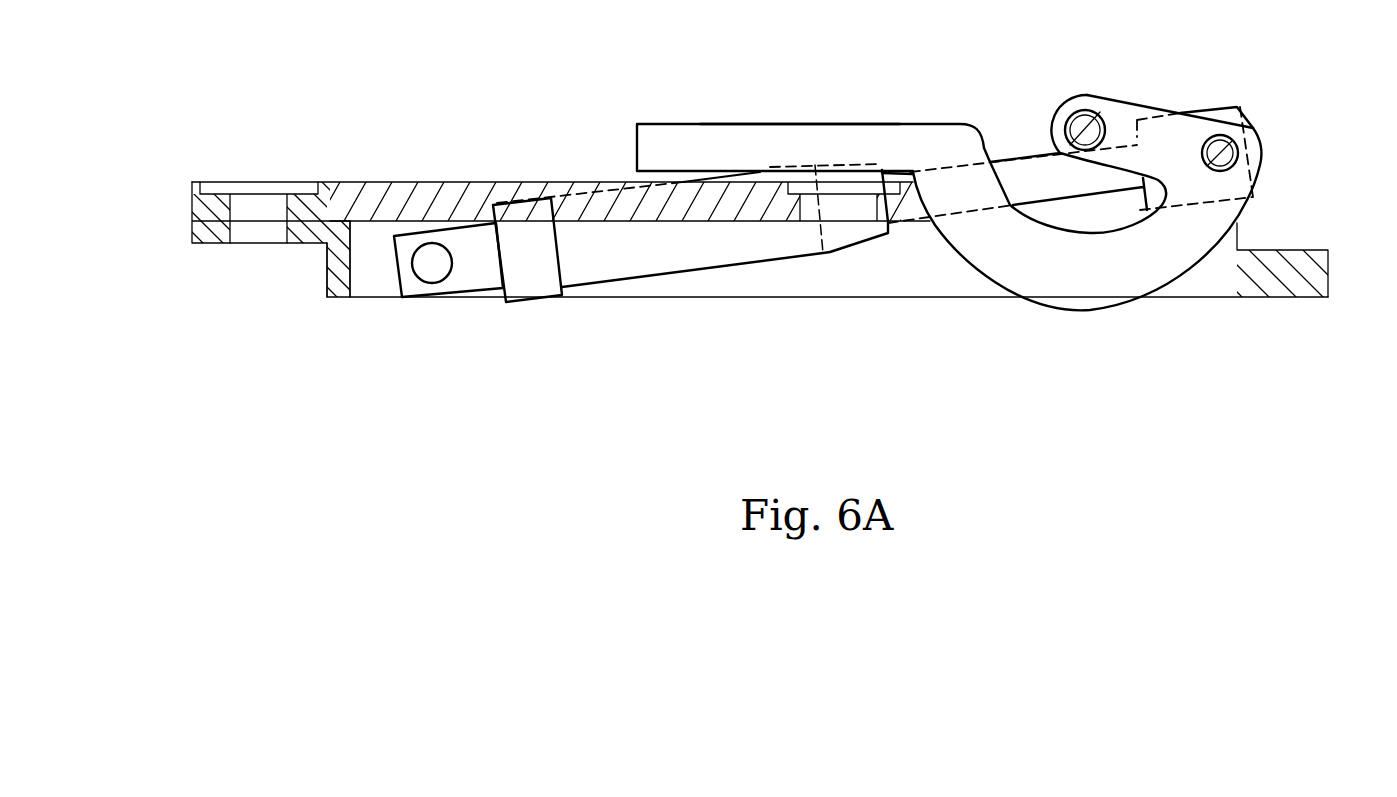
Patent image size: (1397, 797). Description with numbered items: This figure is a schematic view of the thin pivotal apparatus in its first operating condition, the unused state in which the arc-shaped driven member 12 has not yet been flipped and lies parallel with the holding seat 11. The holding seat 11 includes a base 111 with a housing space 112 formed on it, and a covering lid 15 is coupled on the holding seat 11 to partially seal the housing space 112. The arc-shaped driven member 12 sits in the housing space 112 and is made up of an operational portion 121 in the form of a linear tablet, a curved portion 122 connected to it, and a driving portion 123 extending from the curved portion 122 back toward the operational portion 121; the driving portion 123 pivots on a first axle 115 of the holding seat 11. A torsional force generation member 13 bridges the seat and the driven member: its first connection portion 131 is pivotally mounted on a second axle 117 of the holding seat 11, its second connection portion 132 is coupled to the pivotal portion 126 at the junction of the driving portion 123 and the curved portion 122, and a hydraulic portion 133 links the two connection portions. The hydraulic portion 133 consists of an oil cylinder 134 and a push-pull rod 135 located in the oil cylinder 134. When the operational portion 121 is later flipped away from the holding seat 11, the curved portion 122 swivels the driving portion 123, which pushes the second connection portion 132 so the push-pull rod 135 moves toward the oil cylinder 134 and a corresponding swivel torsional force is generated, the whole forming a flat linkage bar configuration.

The holding seat 11 is at (213, 246).
The base 111 is at (303, 246).
The housing space 112 is at (367, 280).
The first axle 115 is at (1085, 128).
The second axle 117 is at (437, 275).
The arc-shaped driven member 12 is at (901, 121).
The operational portion 121 is at (845, 135).
The curved portion 122 is at (1130, 285).
The driving portion 123 is at (1128, 108).
The pivotal portion 126 is at (1268, 150).
The torsional force generation member 13 is at (1150, 211).
The first connection portion 131 is at (470, 240).
The second connection portion 132 is at (1212, 105).
The hydraulic portion 133 is at (822, 285).
The oil cylinder 134 is at (800, 245).
The push-pull rod 135 is at (1050, 200).
The covering lid 15 is at (360, 181).